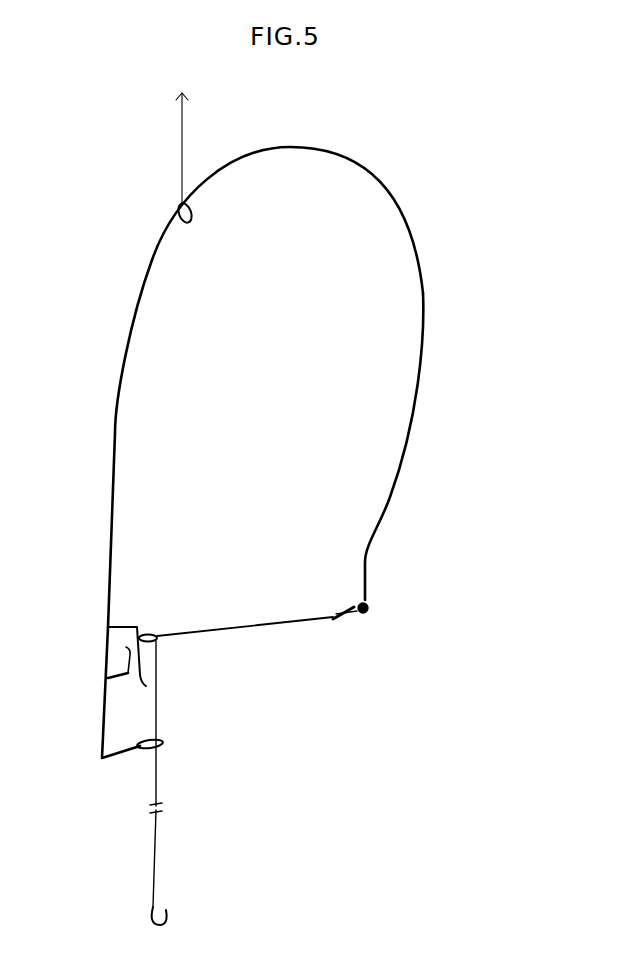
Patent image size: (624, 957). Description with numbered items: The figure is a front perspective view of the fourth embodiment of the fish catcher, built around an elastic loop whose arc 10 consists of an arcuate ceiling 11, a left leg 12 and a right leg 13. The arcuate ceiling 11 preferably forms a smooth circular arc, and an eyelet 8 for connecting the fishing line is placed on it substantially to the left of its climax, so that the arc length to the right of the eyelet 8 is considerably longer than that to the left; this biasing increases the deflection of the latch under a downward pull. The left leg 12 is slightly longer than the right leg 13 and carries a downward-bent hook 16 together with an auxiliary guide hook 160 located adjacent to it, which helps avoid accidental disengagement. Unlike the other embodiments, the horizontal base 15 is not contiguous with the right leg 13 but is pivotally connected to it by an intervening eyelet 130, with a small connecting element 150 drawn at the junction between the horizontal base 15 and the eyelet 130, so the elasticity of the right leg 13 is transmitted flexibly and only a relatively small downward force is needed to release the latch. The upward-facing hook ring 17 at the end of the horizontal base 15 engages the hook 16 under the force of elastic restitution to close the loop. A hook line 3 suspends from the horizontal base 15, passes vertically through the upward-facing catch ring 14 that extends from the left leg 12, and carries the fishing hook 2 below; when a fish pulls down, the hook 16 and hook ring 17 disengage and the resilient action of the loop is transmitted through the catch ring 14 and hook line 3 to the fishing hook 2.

The fishing hook 2 is at (166, 918).
The hook line 3 is at (158, 713).
The eyelet 8 is at (187, 224).
The arc 10 is at (293, 430).
The arcuate ceiling 11 is at (242, 157).
The left leg 12 is at (115, 433).
The right leg 13 is at (423, 343).
The catch ring 14 is at (145, 750).
The horizontal base 15 is at (250, 625).
The hook 16 is at (137, 688).
The hook ring 17 is at (152, 633).
The eyelet 130 is at (365, 615).
The clip 150 is at (345, 602).
The auxiliary guide hook 160 is at (126, 649).